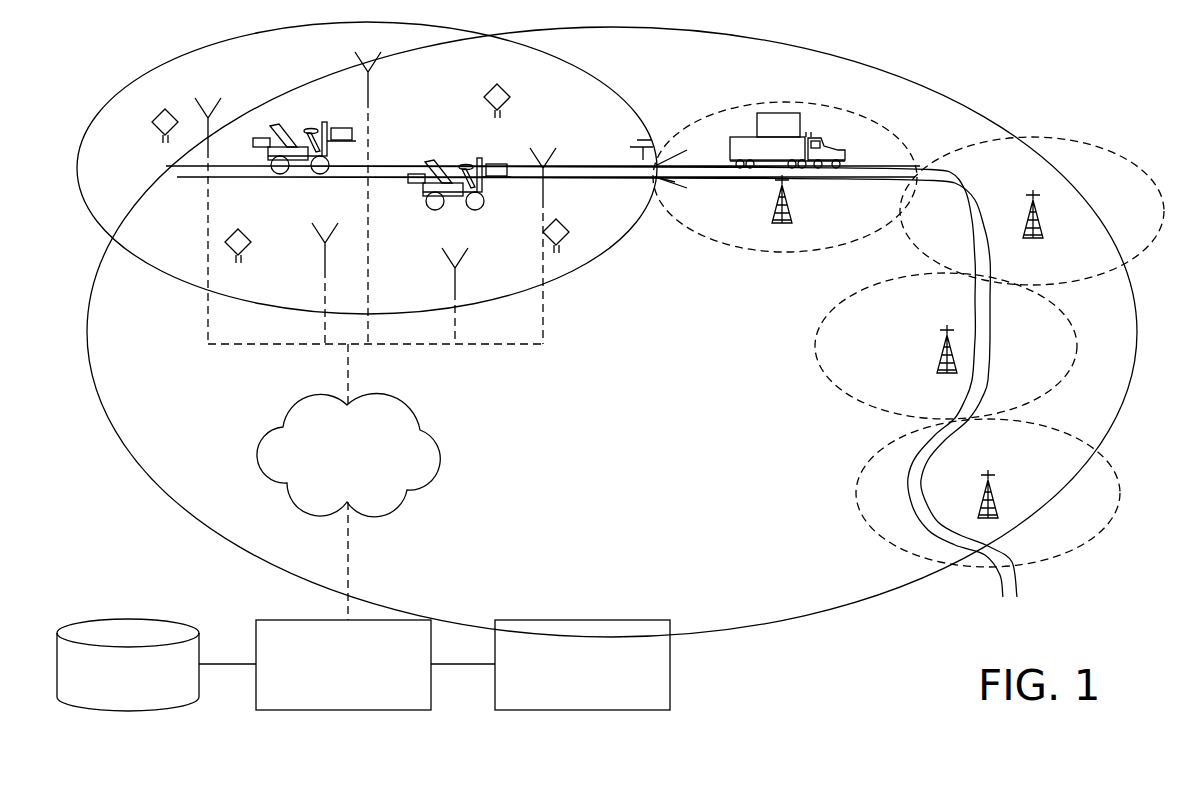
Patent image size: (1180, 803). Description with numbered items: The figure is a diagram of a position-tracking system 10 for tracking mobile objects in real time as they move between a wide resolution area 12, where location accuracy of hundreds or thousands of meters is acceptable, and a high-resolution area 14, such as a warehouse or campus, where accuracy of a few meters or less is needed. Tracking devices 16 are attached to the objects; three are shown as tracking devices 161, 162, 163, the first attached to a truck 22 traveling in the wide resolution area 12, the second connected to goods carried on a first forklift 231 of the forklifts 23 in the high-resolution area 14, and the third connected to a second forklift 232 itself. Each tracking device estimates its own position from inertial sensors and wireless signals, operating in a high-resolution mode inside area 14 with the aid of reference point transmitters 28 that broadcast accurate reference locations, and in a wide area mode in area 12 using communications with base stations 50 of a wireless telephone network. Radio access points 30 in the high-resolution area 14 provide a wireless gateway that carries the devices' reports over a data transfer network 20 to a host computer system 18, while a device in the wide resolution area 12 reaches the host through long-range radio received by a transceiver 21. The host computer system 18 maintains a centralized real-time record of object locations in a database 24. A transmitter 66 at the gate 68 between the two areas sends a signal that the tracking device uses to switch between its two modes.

The position-tracking system 10 is at (988, 62).
The wide resolution area 12 is at (832, 612).
The high-resolution area 14 is at (148, 72).
The tracking devices 16 is at (532, 153).
The tracking device 161 is at (758, 113).
The tracking device 162 is at (458, 163).
The tracking device 163 is at (288, 162).
The host computer system 18 is at (377, 620).
The data transfer network 20 is at (438, 445).
The transceiver 21 is at (597, 620).
The truck 22 is at (727, 148).
The forklifts 23 is at (365, 168).
The first forklift 231 is at (446, 184).
The second forklift 232 is at (289, 143).
The database 24 is at (167, 620).
The reference point transmitters 28 is at (163, 137).
The radio access points 30 is at (214, 115).
The base stations 50 is at (775, 215).
The transmitter 66 is at (632, 140).
The gate 68 is at (660, 180).